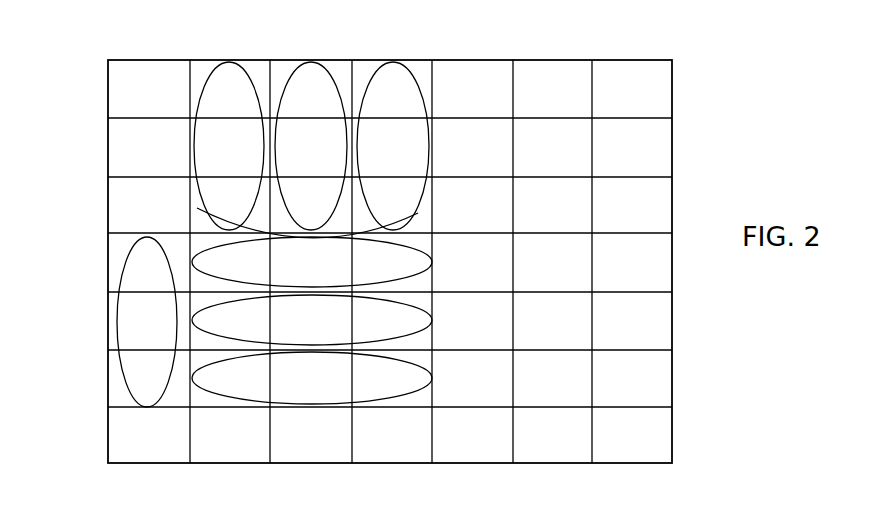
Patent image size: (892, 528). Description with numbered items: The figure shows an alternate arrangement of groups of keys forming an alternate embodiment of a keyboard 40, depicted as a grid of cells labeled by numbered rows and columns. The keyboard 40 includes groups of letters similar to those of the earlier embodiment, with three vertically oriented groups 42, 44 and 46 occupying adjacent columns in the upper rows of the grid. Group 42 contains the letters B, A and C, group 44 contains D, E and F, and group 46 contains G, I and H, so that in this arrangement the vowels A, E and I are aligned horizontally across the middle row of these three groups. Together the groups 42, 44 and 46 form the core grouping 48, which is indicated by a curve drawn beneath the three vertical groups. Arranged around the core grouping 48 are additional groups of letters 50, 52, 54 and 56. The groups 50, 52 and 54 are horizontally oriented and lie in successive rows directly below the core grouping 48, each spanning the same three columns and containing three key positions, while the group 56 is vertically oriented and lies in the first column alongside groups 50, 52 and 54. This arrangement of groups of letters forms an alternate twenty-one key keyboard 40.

The keyboard 40 is at (678, 148).
The group of letters 42 is at (230, 68).
The group of letters 44 is at (314, 68).
The group of letters 46 is at (394, 68).
The core grouping 48 is at (418, 213).
The additional group of letters 50 is at (415, 262).
The additional group of letters 52 is at (414, 320).
The additional group of letters 54 is at (414, 378).
The additional group of letters 56 is at (143, 242).